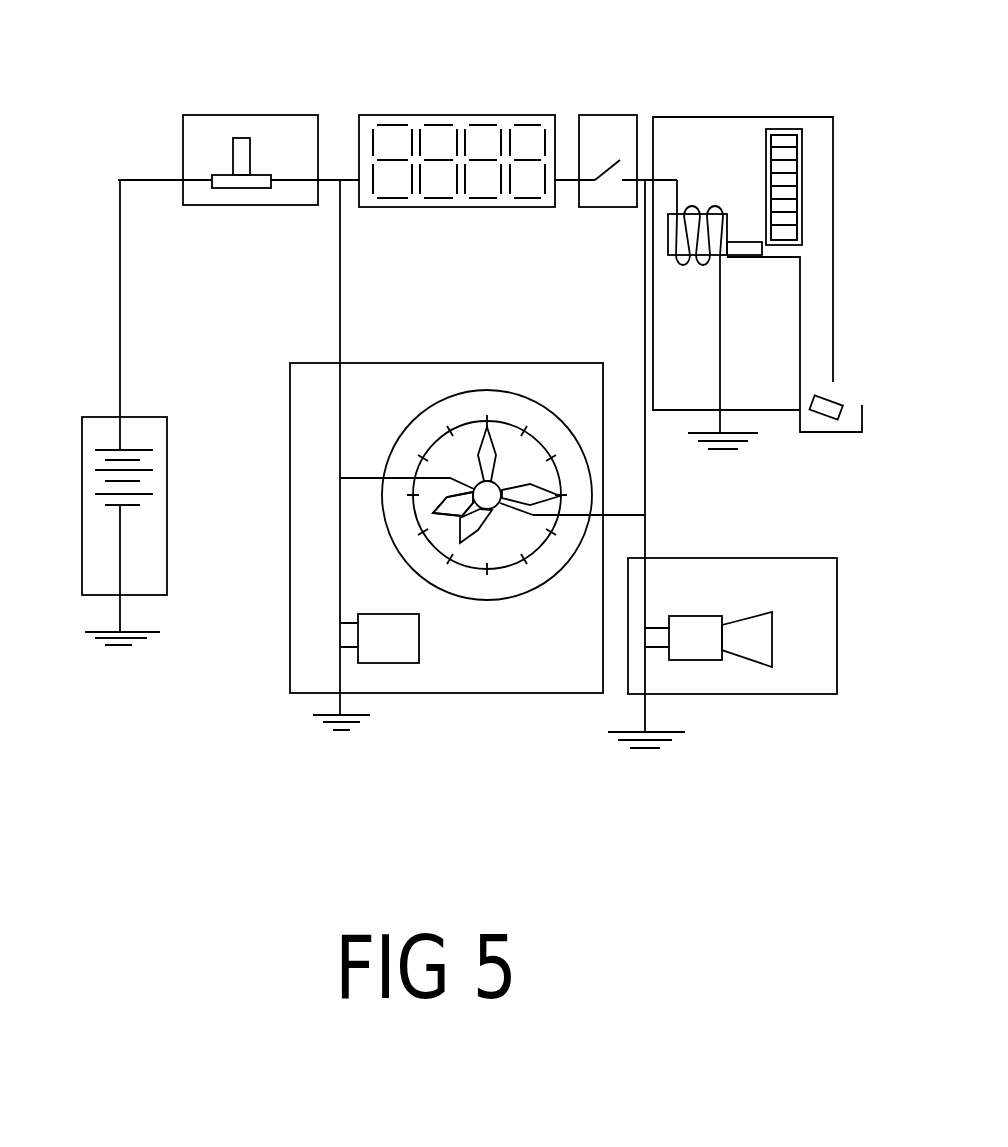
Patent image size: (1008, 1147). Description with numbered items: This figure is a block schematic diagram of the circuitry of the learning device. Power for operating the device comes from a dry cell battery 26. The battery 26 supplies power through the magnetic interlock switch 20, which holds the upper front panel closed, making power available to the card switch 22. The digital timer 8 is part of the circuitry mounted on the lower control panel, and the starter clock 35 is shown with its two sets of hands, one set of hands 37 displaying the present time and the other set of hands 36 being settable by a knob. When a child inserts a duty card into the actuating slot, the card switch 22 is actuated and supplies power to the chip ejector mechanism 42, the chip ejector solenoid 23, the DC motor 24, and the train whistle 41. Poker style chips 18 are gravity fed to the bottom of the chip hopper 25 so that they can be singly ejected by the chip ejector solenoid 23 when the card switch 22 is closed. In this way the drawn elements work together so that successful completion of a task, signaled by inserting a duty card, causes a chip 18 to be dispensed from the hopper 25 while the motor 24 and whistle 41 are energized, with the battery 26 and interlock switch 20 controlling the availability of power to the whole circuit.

The magnetic interlock switch 20 is at (220, 115).
The digital timer 8 is at (386, 115).
The card switch 22 is at (579, 115).
The chip ejector mechanism 42 is at (700, 117).
The chip hopper 25 is at (777, 129).
The chip 18 is at (795, 230).
The dry cell battery 26 is at (82, 417).
The chip ejector solenoid 23 is at (670, 255).
The starter clock 35 is at (553, 585).
The set of hands 36 is at (468, 532).
The set of hands 37 is at (438, 512).
The DC motor 24 is at (393, 663).
The train whistle 41 is at (708, 660).